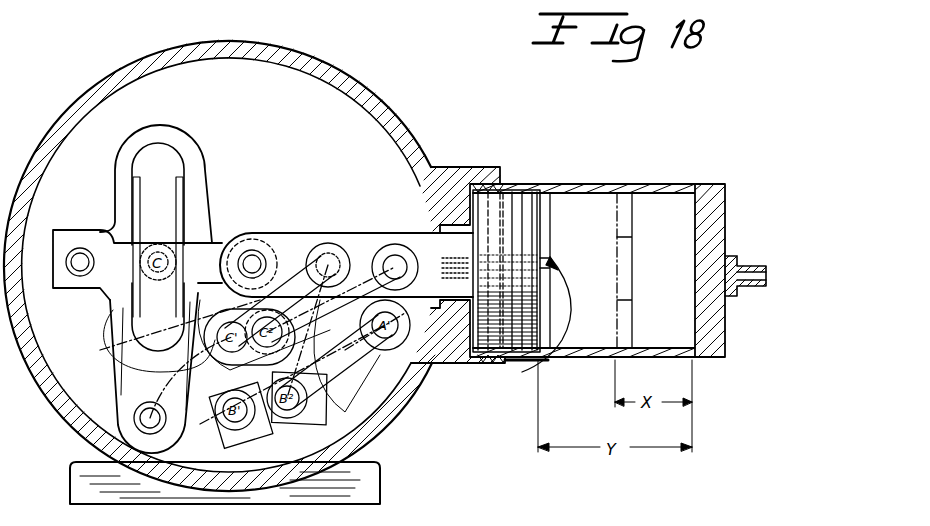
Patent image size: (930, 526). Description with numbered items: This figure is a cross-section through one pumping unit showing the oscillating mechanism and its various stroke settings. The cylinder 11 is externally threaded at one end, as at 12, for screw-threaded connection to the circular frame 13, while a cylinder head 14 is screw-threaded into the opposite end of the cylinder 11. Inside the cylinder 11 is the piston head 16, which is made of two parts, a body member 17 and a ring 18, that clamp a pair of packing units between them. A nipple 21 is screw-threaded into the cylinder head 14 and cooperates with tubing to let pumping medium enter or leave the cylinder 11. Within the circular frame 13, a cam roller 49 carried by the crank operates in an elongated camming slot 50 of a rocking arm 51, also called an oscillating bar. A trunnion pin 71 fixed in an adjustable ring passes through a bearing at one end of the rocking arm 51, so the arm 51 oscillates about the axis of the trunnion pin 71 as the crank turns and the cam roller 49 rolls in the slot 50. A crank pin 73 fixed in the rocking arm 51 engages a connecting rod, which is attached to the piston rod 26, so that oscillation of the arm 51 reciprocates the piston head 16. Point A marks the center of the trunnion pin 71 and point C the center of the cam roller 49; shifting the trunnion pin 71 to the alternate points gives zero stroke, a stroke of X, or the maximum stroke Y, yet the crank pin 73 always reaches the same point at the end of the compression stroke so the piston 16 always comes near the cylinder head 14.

The cylinder 11 is at (666, 168).
The external threads 12 is at (500, 200).
The circular frame 13 is at (440, 167).
The cylinder head 14 is at (727, 229).
The piston head 16 is at (517, 368).
The body member 17 is at (486, 192).
The ring 18 is at (548, 205).
The nipple 21 is at (738, 294).
The piston rod 26 is at (375, 208).
The cam roller 49 is at (182, 240).
The camming slot 50 is at (178, 188).
The rocking arm 51 is at (192, 150).
The trunnion pin 71 is at (136, 416).
The crank pin 73 is at (83, 247).